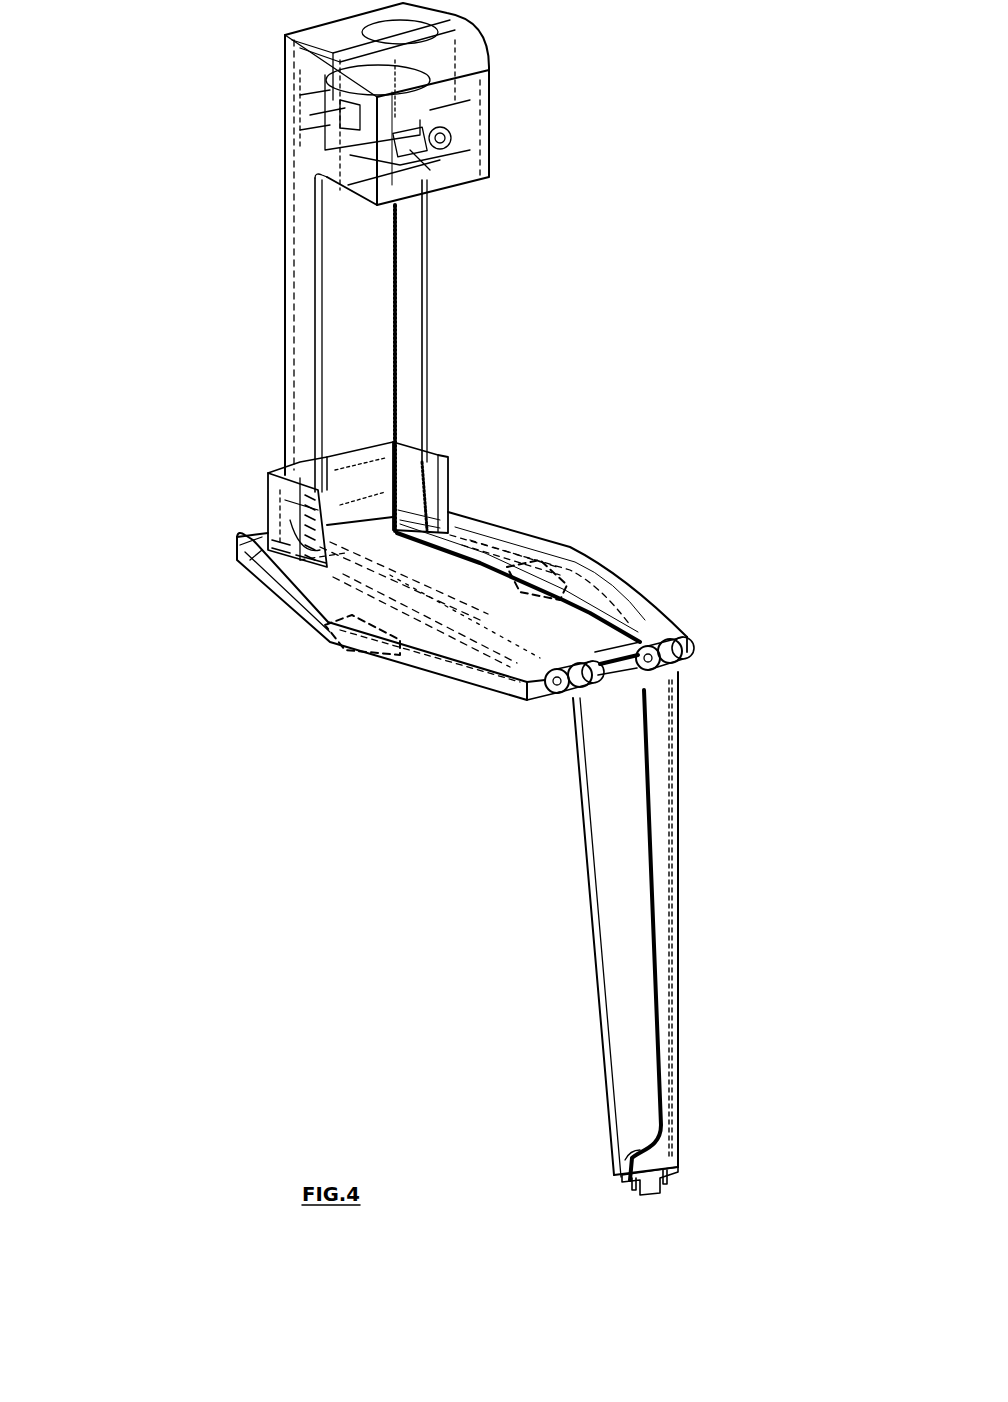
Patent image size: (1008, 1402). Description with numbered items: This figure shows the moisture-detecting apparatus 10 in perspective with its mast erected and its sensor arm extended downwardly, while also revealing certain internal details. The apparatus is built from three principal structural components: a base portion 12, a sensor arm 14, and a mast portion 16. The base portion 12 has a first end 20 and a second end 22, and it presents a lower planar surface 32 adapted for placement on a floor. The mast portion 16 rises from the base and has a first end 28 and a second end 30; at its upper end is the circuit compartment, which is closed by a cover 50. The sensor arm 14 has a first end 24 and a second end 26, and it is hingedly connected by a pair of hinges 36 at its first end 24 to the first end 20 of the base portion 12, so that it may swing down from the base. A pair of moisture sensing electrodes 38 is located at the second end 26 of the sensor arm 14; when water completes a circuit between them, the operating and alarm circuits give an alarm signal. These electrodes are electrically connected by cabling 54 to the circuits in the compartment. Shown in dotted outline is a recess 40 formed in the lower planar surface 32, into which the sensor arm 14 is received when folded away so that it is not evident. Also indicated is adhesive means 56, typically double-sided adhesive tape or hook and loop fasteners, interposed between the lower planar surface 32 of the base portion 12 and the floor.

The apparatus 10 is at (770, 298).
The base portion 12 is at (637, 600).
The sensor arm 14 is at (620, 880).
The mast portion 16 is at (297, 340).
The first end of the base portion 20 is at (505, 733).
The second end of the base portion 22 is at (175, 546).
The first end of the sensor arm 24 is at (750, 657).
The second end of the sensor arm 26 is at (748, 1157).
The first end of the mast portion 28 is at (512, 400).
The second end of the mast portion 30 is at (238, 108).
The lower planar surface 32 is at (270, 629).
The hinges 36 is at (690, 640).
The moisture sensing electrodes 38 is at (675, 1183).
The recess 40 is at (498, 637).
The cover 50 is at (495, 127).
The cabling 54 is at (650, 828).
The adhesive means 56 is at (560, 580).